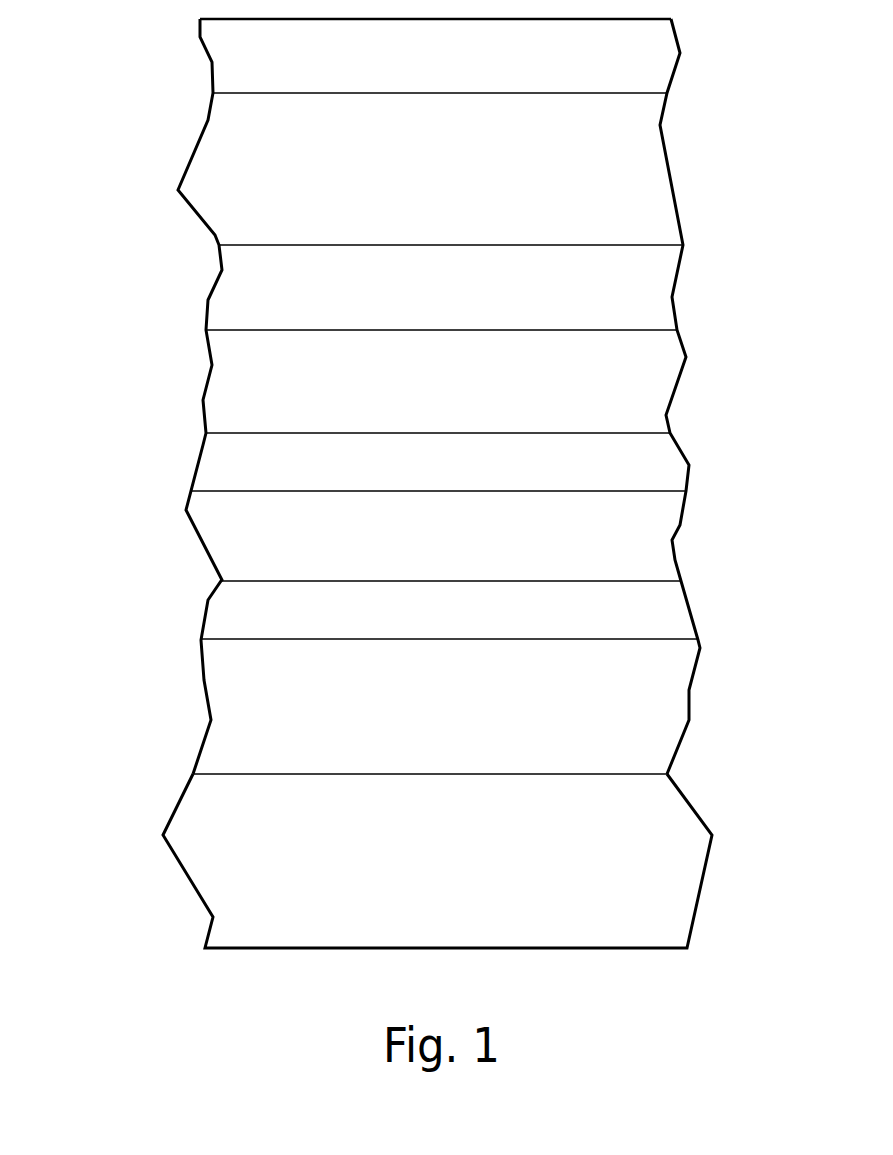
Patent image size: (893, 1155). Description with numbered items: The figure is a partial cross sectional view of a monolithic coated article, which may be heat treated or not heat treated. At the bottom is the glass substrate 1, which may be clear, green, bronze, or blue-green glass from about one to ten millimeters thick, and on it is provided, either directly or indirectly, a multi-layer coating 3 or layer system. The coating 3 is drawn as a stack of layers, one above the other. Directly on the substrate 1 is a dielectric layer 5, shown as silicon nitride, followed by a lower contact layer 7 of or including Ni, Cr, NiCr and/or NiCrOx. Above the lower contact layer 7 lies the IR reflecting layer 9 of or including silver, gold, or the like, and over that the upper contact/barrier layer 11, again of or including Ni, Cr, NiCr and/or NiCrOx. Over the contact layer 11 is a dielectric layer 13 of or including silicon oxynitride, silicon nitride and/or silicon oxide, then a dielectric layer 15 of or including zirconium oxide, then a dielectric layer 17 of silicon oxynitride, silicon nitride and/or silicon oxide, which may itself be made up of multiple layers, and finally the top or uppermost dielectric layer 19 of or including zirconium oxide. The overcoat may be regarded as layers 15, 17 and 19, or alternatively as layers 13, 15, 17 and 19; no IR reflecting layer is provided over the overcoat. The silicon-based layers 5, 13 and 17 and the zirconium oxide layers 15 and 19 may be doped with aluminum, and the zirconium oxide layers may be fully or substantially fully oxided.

The glass substrate 1 is at (673, 879).
The multi-layer coating 3 is at (113, 22).
The dielectric layer 5 is at (655, 698).
The lower contact layer 7 is at (655, 600).
The IR reflecting layer 9 is at (655, 522).
The upper contact/barrier layer 11 is at (655, 455).
The dielectric layer 13 is at (655, 380).
The dielectric layer 15 is at (655, 288).
The dielectric layer 17 is at (655, 171).
The top or uppermost dielectric layer 19 is at (655, 58).